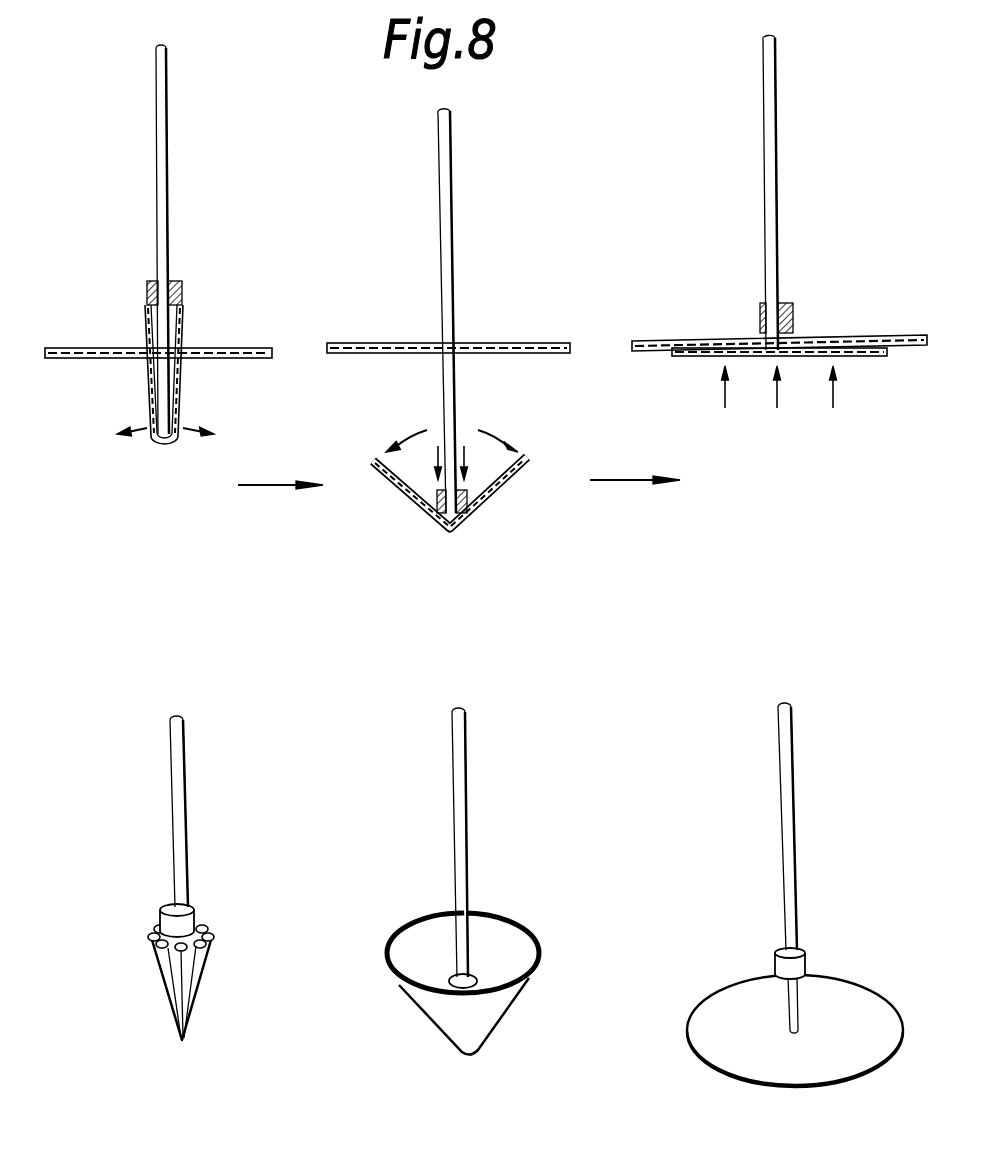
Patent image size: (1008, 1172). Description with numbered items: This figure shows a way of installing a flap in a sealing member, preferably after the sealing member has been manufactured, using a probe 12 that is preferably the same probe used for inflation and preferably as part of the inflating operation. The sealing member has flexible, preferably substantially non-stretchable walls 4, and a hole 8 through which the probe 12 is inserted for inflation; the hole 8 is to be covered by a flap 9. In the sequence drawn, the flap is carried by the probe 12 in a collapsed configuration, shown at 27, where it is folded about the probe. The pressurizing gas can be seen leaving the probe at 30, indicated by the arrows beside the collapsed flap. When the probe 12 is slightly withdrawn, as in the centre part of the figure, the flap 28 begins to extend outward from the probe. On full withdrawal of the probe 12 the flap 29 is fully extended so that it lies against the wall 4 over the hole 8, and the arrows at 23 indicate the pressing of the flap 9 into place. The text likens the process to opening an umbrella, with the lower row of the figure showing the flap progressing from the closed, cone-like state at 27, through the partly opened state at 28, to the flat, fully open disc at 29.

The walls 4 is at (243, 348).
The hole 8 is at (150, 347).
The flap 9 is at (868, 354).
The probe 12 is at (157, 125).
The pressing force arrows 23 is at (779, 407).
The flap in collapsed configuration 27 is at (152, 936).
The flap beginning to extend 28 is at (404, 936).
The fully extended flap 29 is at (738, 985).
The pressurizing gas leaving the probe 30 is at (170, 442).